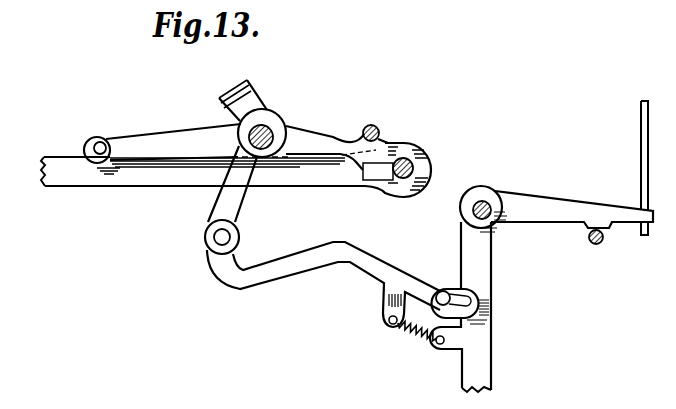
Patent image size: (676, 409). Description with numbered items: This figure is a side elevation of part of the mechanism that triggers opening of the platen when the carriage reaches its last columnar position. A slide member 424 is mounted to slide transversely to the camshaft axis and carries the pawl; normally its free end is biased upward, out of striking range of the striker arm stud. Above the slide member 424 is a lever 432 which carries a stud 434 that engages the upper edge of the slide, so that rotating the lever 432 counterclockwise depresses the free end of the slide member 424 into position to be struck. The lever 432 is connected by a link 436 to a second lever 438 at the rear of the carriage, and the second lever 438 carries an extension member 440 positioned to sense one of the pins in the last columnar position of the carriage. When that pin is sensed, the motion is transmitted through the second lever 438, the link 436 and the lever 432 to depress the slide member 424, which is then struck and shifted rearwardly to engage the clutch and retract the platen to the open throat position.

The slide member 424 is at (73, 180).
The lever 432 is at (152, 142).
The stud 434 is at (95, 143).
The link 436 is at (290, 268).
The second lever 438 is at (540, 210).
The extension member 440 is at (640, 122).